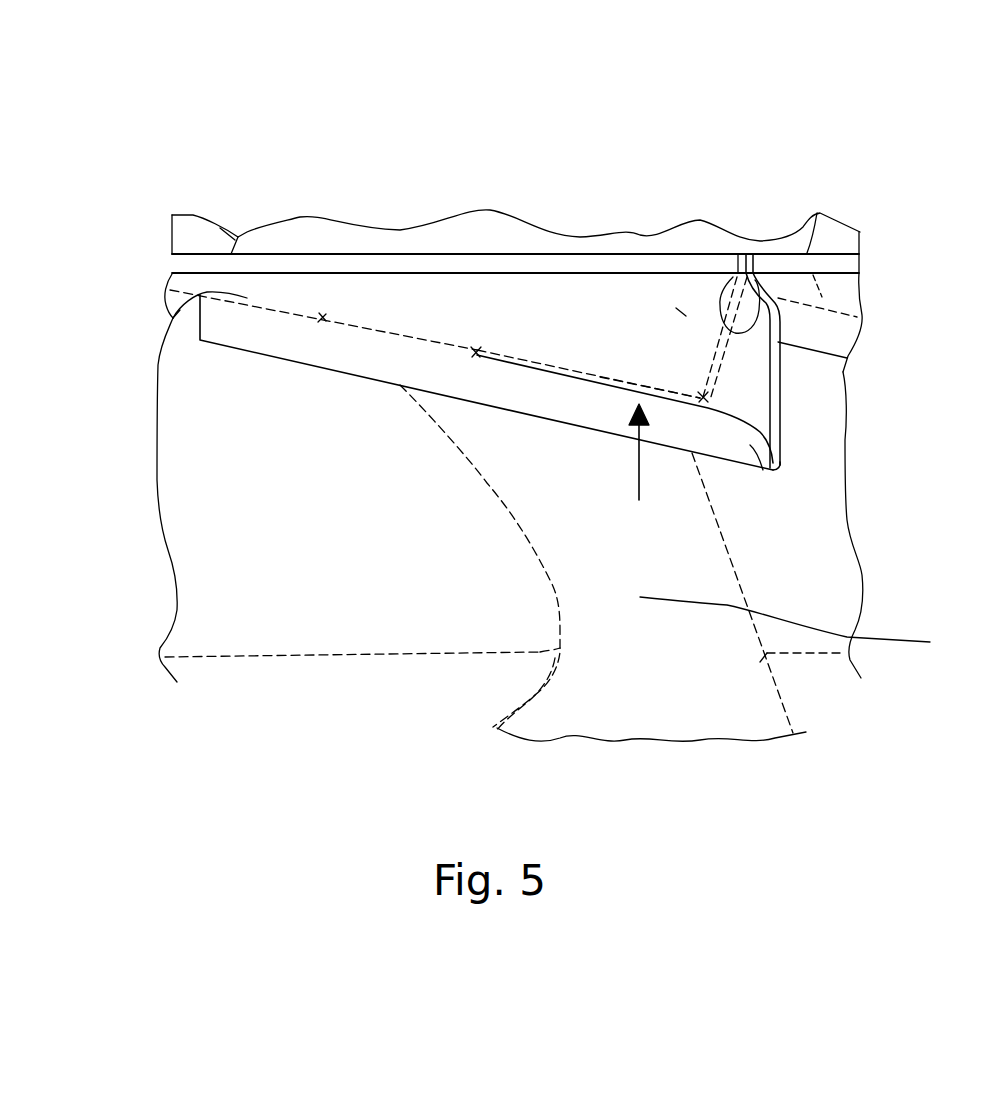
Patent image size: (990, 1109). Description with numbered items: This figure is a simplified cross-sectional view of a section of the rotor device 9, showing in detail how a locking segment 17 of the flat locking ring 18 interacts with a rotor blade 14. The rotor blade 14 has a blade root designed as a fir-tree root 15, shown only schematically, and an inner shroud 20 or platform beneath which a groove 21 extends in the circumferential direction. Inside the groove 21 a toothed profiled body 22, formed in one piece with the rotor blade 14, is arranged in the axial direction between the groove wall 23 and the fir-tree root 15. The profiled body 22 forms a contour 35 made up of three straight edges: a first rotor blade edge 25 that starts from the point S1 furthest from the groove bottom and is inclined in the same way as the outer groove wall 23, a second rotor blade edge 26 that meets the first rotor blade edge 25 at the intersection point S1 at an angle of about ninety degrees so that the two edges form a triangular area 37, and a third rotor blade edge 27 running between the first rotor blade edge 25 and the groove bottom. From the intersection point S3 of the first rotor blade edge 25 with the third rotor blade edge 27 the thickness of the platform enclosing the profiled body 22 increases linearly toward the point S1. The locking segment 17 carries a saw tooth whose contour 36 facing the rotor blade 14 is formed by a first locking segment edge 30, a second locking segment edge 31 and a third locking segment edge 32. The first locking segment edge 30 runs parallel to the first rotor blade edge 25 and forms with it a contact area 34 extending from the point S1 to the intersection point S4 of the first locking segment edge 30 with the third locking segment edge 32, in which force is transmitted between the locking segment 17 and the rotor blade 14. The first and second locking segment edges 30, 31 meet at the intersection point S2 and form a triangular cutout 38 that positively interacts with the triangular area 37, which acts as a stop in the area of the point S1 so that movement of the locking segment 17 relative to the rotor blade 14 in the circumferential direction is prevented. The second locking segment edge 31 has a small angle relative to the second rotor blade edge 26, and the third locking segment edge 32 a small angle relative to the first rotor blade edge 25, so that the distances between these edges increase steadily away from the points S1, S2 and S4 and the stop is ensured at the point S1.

The rotor device 9 is at (92, 190).
The rotor blade 14 is at (226, 232).
The fir-tree root 15 is at (808, 628).
The locking segment 17 is at (150, 375).
The locking ring 18 is at (130, 440).
The inner shroud 20 is at (186, 254).
The groove 21 is at (790, 360).
The profiled body 22 is at (596, 304).
The groove wall 23 is at (760, 468).
The first rotor blade edge 25 is at (372, 325).
The second rotor blade edge 26 is at (733, 277).
The third rotor blade edge 27 is at (241, 294).
The first locking segment edge 30 is at (628, 380).
The second locking segment edge 31 is at (756, 280).
The third locking segment edge 32 is at (422, 341).
The contact area 34 is at (477, 357).
The contour 35 is at (493, 345).
The contour 36 is at (324, 312).
The triangular area 37 is at (681, 312).
The triangular cutout 38 is at (640, 471).
The intersection point S1 is at (762, 460).
The intersection point S2 is at (703, 397).
The intersection point S3 is at (175, 318).
The intersection point S4 is at (475, 350).